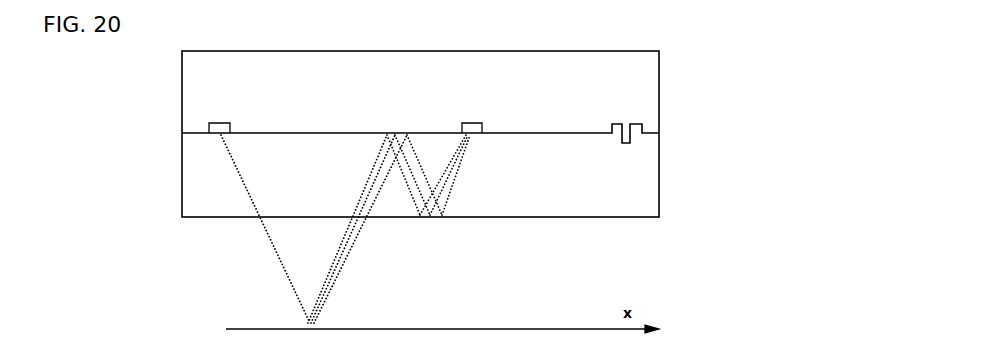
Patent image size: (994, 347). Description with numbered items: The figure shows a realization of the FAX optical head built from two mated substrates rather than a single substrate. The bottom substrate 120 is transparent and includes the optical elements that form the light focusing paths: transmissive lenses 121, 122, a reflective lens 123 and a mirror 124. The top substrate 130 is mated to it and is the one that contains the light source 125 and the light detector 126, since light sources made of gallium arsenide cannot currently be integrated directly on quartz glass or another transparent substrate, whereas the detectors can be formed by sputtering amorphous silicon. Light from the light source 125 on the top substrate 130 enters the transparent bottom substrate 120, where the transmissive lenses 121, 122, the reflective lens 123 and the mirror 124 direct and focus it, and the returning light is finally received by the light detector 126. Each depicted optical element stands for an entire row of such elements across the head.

The substrate 120 is at (181, 95).
The top substrate 130 is at (181, 180).
The transmissive lens 121 is at (262, 216).
The transmissive lens 122 is at (367, 217).
The reflective lens 123 is at (434, 217).
The mirror 124 is at (406, 133).
The light source 125 is at (230, 123).
The light detector 126 is at (482, 123).